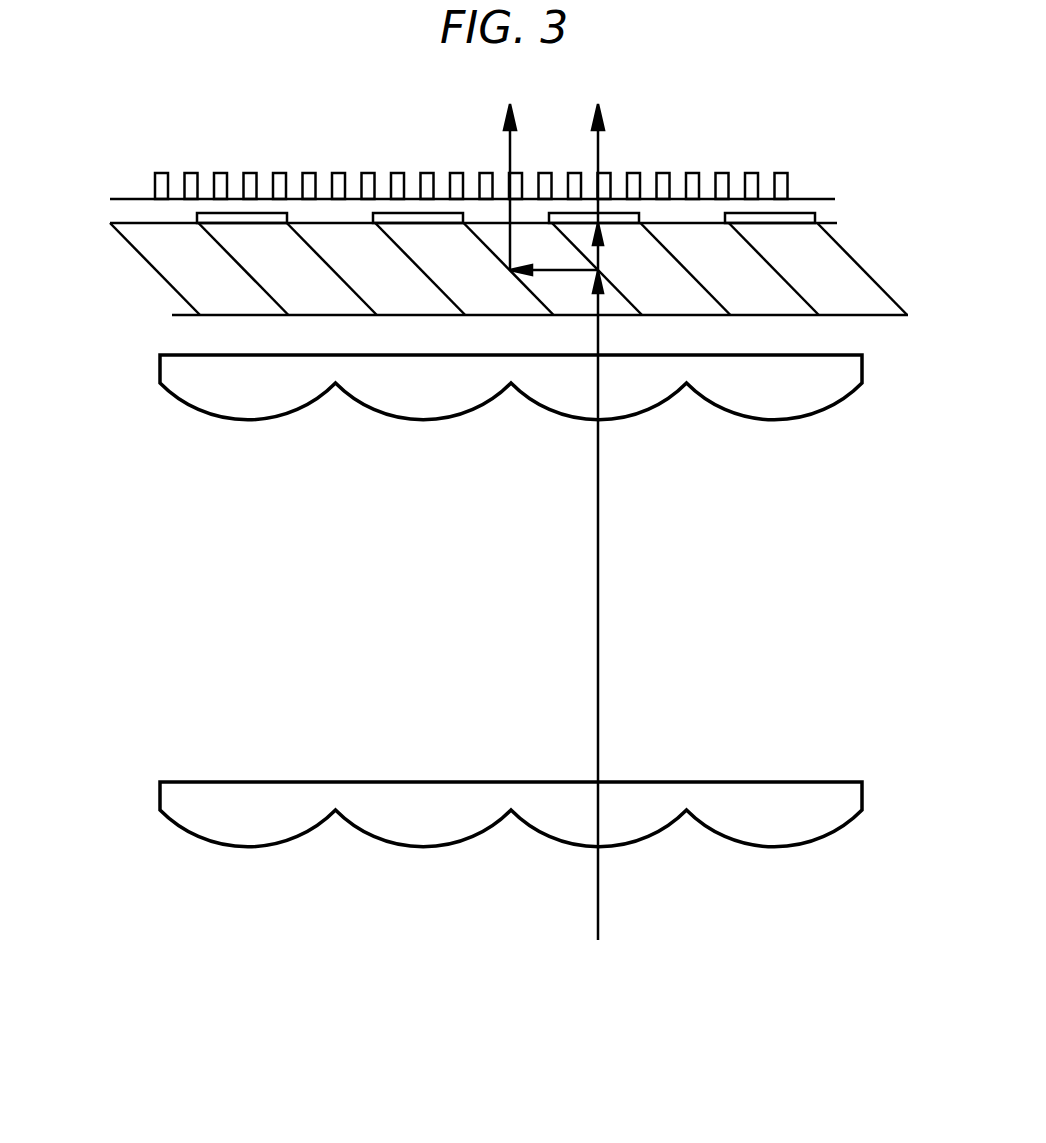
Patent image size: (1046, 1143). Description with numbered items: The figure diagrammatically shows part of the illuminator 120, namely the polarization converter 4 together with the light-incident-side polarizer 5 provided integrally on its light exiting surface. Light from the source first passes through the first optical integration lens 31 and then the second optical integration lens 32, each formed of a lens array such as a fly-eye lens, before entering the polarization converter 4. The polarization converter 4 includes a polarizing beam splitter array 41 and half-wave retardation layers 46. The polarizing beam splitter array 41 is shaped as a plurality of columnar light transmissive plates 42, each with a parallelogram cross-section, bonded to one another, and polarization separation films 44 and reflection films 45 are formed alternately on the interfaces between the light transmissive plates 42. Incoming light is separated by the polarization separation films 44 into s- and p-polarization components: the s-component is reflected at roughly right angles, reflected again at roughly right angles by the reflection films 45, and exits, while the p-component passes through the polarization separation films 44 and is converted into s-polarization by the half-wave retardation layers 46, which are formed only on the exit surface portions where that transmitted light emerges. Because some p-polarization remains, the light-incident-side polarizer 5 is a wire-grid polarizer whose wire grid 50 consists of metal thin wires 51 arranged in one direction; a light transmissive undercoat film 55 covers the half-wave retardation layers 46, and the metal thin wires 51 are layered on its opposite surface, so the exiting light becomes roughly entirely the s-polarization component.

The illuminator 120 is at (100, 142).
The light-incident-side polarizer 5 is at (459, 167).
The wire grid 50 is at (471, 151).
The metal thin wires 51 is at (250, 172).
The undercoat film 55 is at (178, 200).
The λ/2 retardation layers 46 is at (640, 213).
The polarizing beam splitter array 41 is at (539, 292).
The light transmissive plates 42 is at (508, 349).
The polarization separation films 44 is at (619, 297).
The reflection films 45 is at (520, 283).
The polarization converter 4 is at (521, 292).
The second optical integration lens 32 is at (840, 383).
The first optical integration lens 31 is at (840, 800).